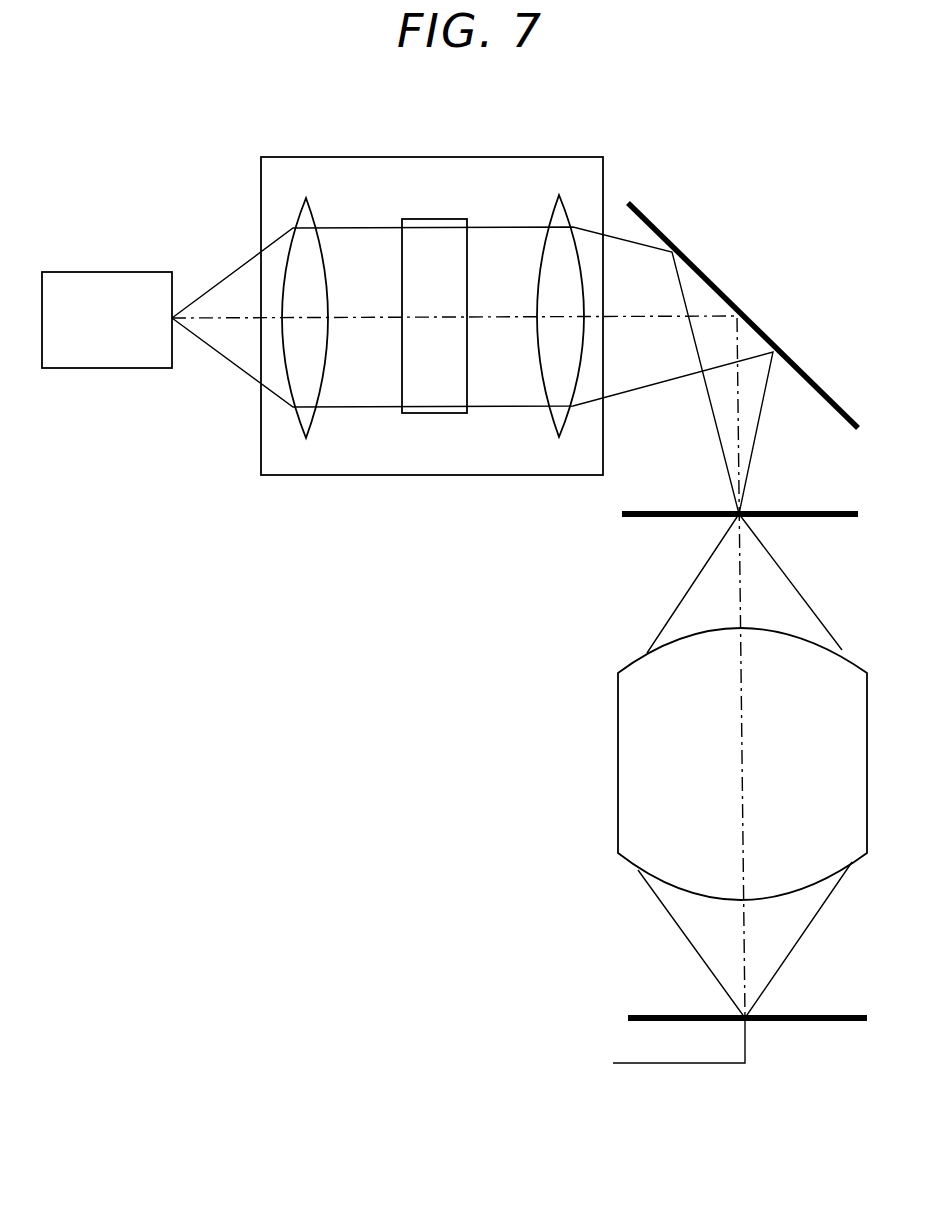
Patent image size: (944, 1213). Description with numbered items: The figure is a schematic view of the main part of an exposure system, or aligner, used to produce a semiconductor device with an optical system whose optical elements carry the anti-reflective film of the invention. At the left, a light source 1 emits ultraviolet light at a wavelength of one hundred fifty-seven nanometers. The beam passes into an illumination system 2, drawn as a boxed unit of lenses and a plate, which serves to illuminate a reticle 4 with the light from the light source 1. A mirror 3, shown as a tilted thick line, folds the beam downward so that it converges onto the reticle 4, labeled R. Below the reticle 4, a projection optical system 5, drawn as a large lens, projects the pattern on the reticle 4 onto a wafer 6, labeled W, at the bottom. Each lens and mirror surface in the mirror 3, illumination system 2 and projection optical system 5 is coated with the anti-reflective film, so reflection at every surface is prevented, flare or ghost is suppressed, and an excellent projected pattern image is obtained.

The light source 1 is at (102, 272).
The illumination system 2 is at (490, 157).
The mirror 3 is at (703, 275).
The reticle 4 is at (817, 508).
The projection optical system 5 is at (857, 663).
The wafer 6 is at (825, 1013).